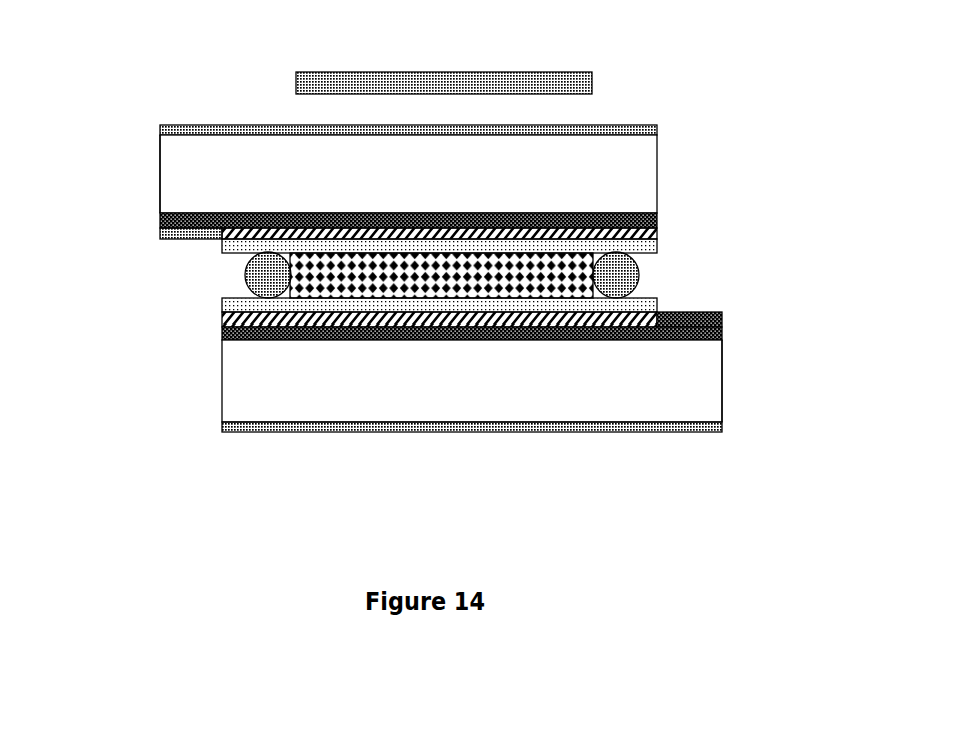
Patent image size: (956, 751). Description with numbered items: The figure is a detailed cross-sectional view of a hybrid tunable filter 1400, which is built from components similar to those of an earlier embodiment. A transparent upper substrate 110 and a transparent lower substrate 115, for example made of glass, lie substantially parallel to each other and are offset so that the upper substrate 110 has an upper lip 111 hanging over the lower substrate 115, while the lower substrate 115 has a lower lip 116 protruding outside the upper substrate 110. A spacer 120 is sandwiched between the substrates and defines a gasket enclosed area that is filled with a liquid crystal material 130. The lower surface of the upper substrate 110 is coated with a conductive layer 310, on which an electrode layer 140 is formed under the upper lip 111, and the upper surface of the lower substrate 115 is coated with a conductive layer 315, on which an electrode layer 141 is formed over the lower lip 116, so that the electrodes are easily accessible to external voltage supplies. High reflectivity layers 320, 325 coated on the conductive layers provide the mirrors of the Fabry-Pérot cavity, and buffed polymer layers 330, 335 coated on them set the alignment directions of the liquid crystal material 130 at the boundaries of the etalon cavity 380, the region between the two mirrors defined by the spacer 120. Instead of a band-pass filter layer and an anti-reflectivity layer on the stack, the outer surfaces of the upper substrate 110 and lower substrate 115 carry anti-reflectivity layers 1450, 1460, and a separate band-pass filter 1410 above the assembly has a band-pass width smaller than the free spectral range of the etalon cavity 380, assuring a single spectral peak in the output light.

The hybrid tunable filter 1400 is at (198, 122).
The band-pass filter 1410 is at (573, 83).
The anti-reflectivity layer 1450 is at (632, 127).
The upper substrate 110 is at (428, 185).
The upper lip 111 is at (176, 190).
The conductive layer 310 is at (657, 222).
The high reflectivity layer 320 is at (657, 233).
The buffed polymer layer 330 is at (645, 247).
The etalon cavity 380 is at (815, 245).
The electrode layer 140 is at (162, 233).
The spacer 120 is at (262, 274).
The liquid crystal material 130 is at (490, 275).
The buffed polymer layer 335 is at (222, 306).
The high reflectivity layer 325 is at (222, 320).
The conductive layer 315 is at (222, 333).
The electrode layer 141 is at (722, 322).
The lower substrate 115 is at (473, 390).
The lower lip 116 is at (690, 375).
The anti-reflectivity layer 1460 is at (640, 428).